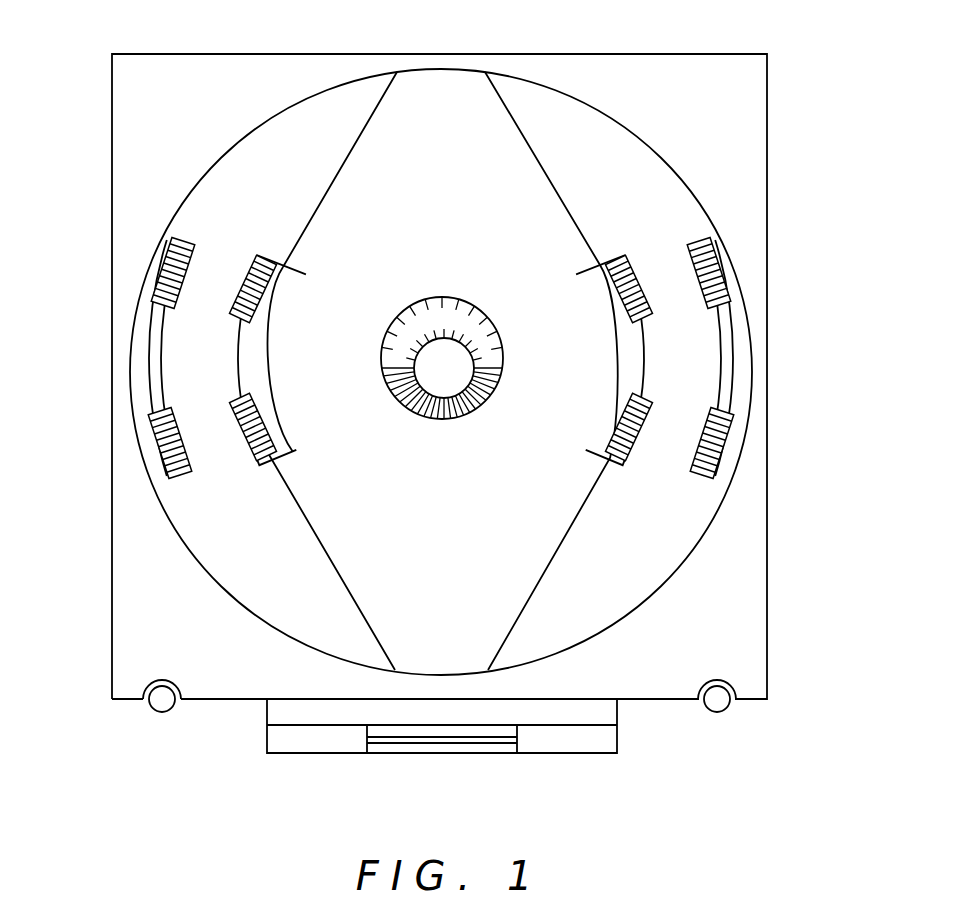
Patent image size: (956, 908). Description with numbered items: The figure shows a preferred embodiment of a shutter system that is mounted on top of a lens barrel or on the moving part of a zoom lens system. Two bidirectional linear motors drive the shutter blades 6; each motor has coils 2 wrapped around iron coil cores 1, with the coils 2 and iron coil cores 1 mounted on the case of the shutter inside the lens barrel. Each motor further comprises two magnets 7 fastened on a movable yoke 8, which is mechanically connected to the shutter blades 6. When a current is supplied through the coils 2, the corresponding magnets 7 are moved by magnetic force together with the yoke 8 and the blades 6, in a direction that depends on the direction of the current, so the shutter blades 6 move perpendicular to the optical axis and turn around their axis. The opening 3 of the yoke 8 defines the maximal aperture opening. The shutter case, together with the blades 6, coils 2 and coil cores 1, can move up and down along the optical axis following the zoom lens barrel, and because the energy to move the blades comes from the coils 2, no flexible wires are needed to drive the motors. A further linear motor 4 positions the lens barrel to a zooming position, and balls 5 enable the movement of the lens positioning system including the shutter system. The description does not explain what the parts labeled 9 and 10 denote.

The iron coil core 1 is at (812, 370).
The coil 2 is at (813, 262).
The opening 3 is at (444, 284).
The linear motor 4 is at (352, 713).
The ball 5 is at (708, 743).
The shutter blade 6 is at (500, 357).
The magnet 7 is at (635, 492).
The yoke 8 is at (467, 108).
The pole piece 9 is at (622, 382).
The housing 10 is at (782, 93).